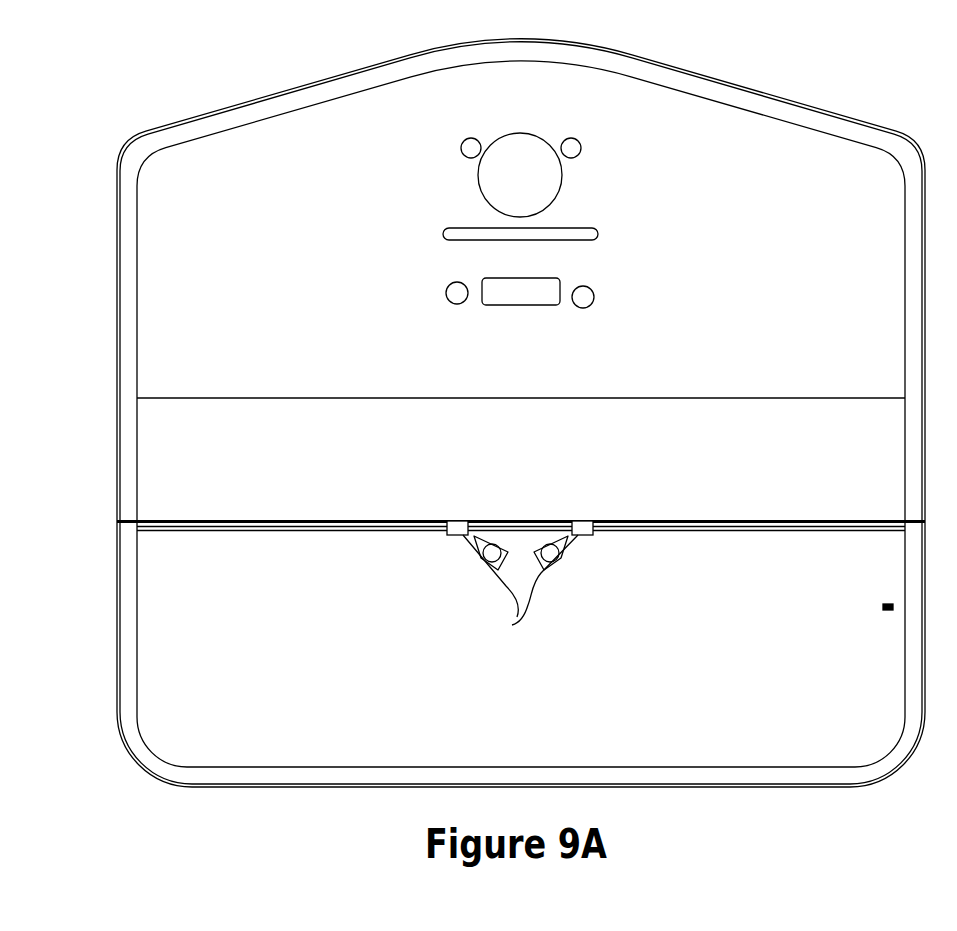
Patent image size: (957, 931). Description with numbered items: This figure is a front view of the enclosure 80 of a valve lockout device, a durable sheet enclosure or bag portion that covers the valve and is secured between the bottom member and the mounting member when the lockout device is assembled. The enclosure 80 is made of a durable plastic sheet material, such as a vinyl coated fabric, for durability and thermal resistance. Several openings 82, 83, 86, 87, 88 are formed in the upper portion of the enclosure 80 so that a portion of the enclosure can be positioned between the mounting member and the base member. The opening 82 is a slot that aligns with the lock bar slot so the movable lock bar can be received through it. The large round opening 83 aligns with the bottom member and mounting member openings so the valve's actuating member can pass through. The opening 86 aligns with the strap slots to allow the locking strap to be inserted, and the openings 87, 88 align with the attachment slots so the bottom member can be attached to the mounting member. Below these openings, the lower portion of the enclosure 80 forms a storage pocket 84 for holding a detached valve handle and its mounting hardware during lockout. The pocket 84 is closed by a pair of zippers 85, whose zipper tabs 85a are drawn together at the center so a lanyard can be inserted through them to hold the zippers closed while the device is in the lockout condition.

The enclosure 80 is at (287, 80).
The opening 82 is at (600, 250).
The opening 83 is at (470, 196).
The storage pocket 84 is at (188, 571).
The zippers 85 is at (566, 519).
The zipper tabs 85a is at (520, 589).
The opening 86 is at (578, 277).
The opening 87 is at (481, 141).
The opening 88 is at (574, 306).